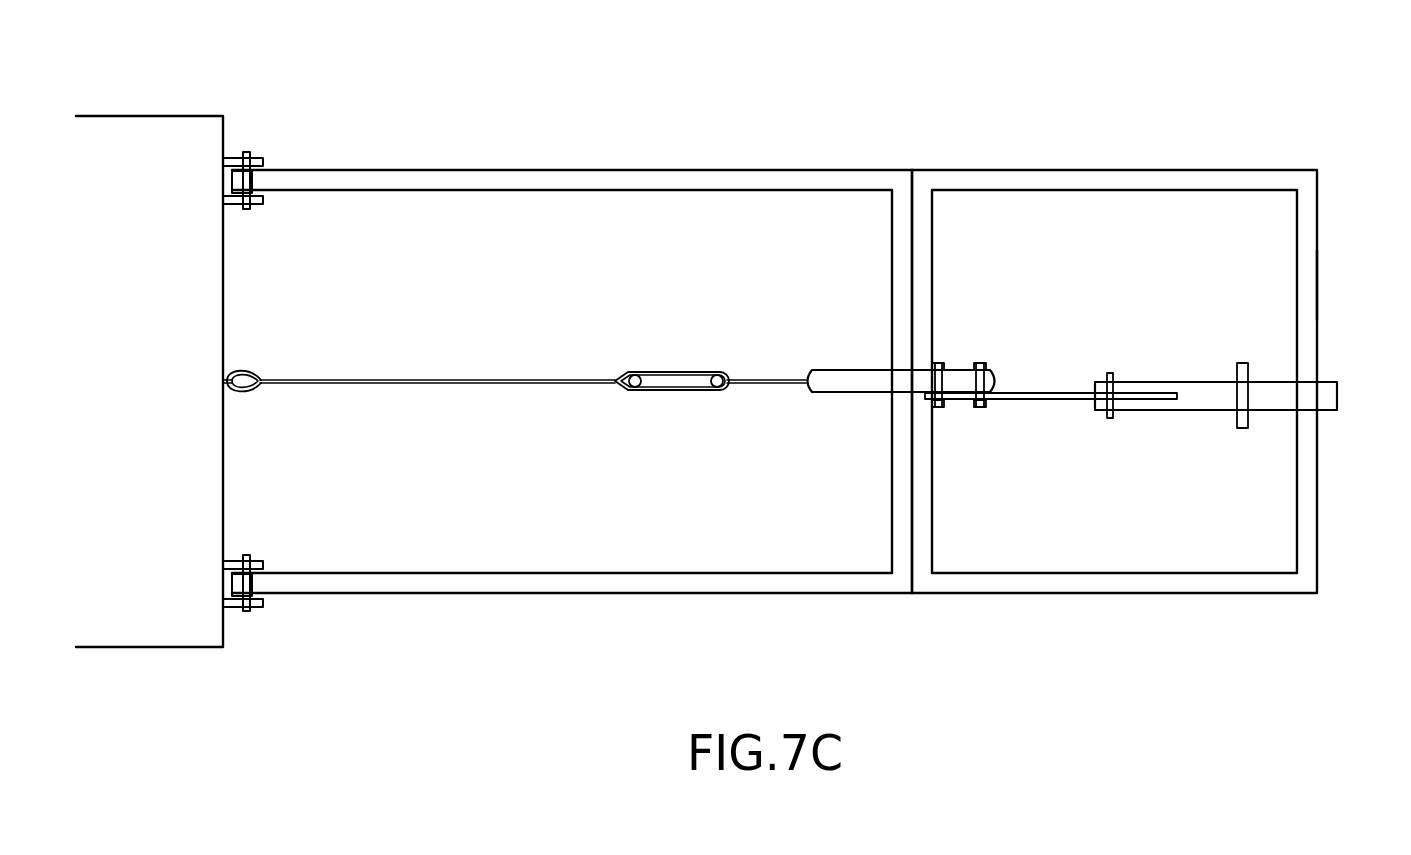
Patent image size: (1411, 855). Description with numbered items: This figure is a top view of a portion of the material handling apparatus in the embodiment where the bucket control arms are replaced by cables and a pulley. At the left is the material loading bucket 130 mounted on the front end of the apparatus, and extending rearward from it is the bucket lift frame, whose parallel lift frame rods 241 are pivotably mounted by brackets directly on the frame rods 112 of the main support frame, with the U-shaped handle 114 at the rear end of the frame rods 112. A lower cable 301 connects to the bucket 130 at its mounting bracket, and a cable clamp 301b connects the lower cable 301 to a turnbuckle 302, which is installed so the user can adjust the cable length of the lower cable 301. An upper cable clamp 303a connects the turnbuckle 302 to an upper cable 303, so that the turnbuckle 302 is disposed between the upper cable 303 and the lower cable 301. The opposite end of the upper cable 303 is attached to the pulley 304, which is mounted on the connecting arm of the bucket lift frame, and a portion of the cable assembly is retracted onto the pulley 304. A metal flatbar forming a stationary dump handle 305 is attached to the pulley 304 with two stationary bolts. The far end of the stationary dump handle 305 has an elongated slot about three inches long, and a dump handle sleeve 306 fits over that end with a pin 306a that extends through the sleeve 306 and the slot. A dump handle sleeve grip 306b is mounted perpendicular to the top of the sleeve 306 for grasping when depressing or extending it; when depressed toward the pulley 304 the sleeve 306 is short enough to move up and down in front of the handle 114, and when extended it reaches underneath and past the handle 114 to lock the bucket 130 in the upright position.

The material loading bucket 130 is at (153, 133).
The lift frame rod 241 is at (762, 594).
The frame rod 112 is at (1050, 176).
The handle 114 is at (1318, 284).
The lower cable 301 is at (455, 379).
The cable clamp 301b is at (625, 375).
The turnbuckle 302 is at (667, 386).
The upper cable 303 is at (763, 382).
The upper cable clamp 303a is at (720, 388).
The pulley 304 is at (848, 370).
The stationary dump handle 305 is at (1030, 393).
The dump handle sleeve 306 is at (1195, 382).
The pin 306a is at (1110, 418).
The dump handle sleeve grip 306b is at (1243, 363).